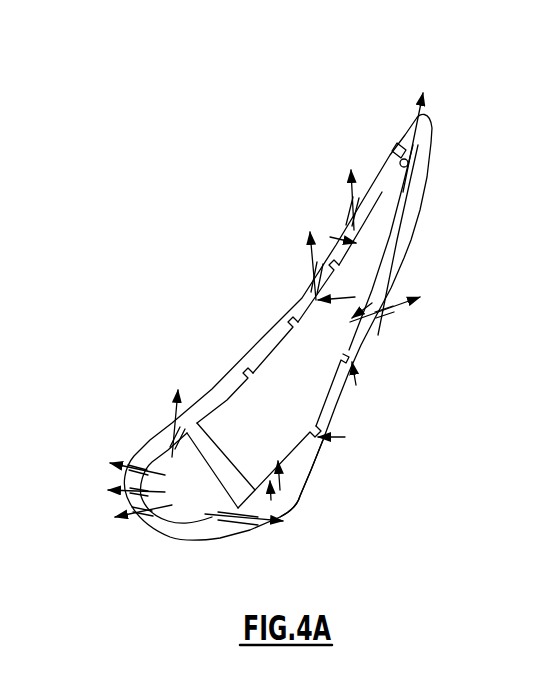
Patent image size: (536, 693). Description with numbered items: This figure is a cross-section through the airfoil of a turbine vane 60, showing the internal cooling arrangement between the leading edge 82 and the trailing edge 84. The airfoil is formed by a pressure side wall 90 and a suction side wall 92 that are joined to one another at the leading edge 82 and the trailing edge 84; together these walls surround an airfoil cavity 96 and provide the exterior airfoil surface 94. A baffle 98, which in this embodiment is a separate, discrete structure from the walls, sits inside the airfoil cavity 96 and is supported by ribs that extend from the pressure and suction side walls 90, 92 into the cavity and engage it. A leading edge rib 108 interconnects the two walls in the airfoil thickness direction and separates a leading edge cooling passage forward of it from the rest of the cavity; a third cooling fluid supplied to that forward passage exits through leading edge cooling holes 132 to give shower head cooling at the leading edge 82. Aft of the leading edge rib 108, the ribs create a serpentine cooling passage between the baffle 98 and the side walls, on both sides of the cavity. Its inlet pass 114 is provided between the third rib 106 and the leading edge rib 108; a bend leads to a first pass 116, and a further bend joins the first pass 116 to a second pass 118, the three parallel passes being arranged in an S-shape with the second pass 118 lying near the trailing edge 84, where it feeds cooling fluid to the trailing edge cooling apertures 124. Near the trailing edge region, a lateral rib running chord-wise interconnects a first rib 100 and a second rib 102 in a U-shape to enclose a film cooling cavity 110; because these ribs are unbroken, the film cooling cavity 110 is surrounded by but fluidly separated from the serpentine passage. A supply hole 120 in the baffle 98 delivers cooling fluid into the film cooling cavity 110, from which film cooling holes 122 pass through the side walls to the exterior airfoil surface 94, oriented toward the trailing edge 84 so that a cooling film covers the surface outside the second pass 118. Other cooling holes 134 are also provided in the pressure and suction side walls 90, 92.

The vane 60 is at (281, 109).
The leading edge 82 is at (135, 525).
The trailing edge 84 is at (434, 120).
The pressure side wall 90 is at (210, 392).
The suction side wall 92 is at (318, 455).
The exterior airfoil surface 94 is at (316, 475).
The airfoil cavity 96 is at (271, 500).
The baffle 98 is at (280, 490).
The first rib 100 is at (356, 385).
The second rib 102 is at (378, 345).
The third rib 106 is at (345, 437).
The leading edge rib 108 is at (223, 473).
The film cooling cavity 110 is at (302, 310).
The inlet pass 114 is at (237, 387).
The first pass 116 is at (272, 347).
The second pass 118 is at (330, 237).
The supply hole 120 is at (330, 300).
The film cooling holes 122 is at (311, 262).
The trailing edge cooling apertures 124 is at (395, 146).
The leading edge cooling holes 132 is at (125, 484).
The cooling holes 134 is at (344, 203).